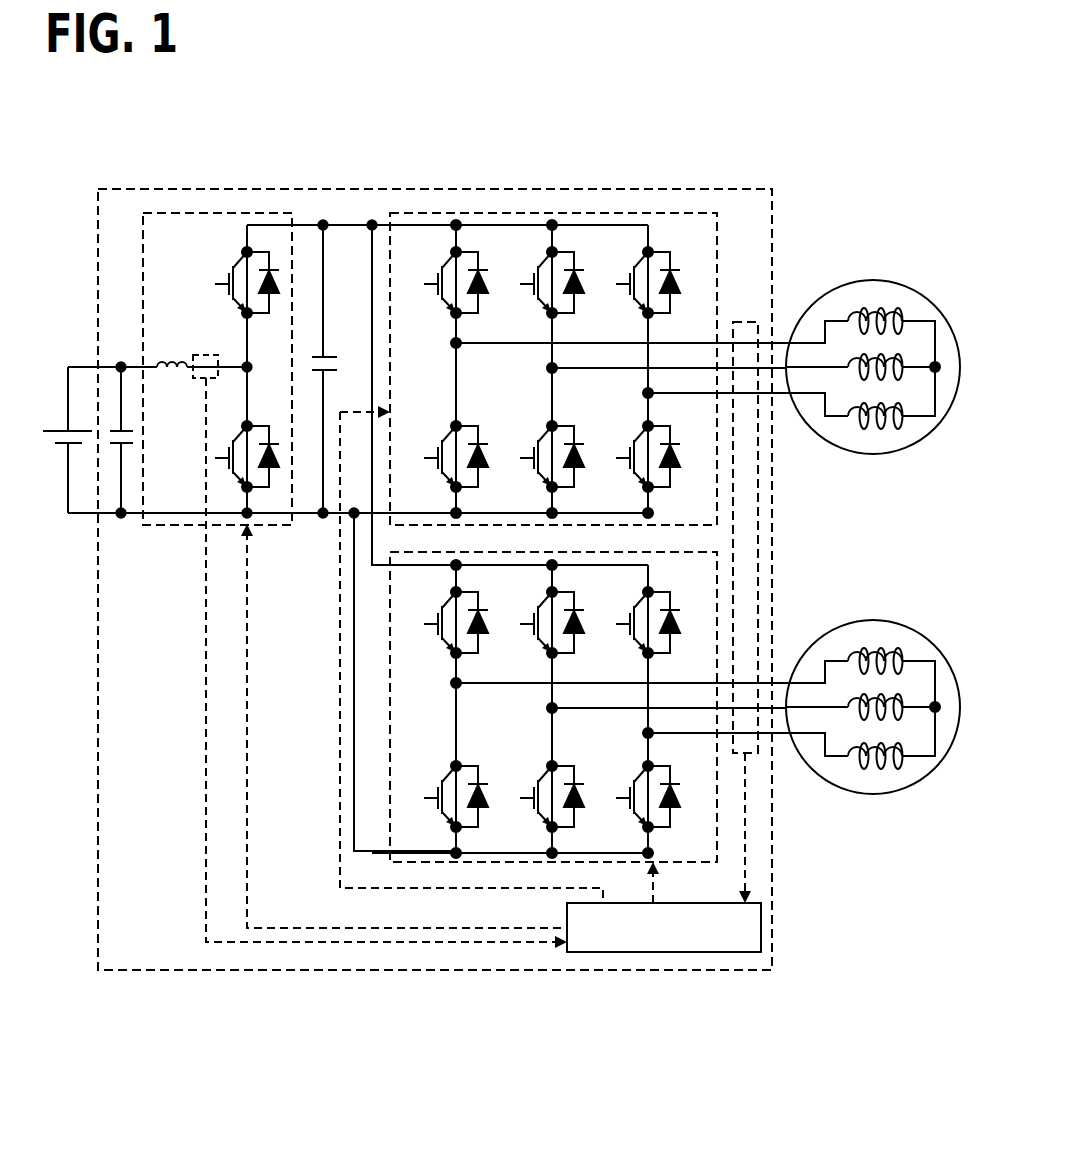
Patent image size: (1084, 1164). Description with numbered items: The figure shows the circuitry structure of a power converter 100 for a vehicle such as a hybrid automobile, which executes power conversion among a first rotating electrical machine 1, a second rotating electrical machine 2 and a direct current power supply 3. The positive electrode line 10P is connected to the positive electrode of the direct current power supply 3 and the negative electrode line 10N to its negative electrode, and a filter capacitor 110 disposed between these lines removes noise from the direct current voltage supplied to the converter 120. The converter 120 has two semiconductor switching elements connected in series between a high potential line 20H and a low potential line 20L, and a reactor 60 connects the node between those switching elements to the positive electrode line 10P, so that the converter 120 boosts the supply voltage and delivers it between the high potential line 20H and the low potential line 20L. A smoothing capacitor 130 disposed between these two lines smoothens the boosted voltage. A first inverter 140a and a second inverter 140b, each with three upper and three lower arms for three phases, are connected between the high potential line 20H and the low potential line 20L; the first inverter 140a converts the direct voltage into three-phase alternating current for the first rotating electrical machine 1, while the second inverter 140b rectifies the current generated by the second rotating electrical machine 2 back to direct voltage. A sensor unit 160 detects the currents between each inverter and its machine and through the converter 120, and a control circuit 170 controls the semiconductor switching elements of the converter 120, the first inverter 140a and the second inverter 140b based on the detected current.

The first rotating electrical machine 1 is at (870, 280).
The second rotating electrical machine 2 is at (870, 620).
The direct current power supply 3 is at (68, 428).
The power converter 100 is at (754, 189).
The filter capacitor 110 is at (77, 367).
The converter 120 is at (243, 213).
The smoothing capacitor 130 is at (330, 355).
The first inverter 140a is at (688, 213).
The second inverter 140b is at (392, 752).
The sensor unit 160 is at (207, 353).
The control circuit 170 is at (697, 953).
The reactor 60 is at (168, 355).
The positive electrode line 10P is at (122, 362).
The negative electrode line 10N is at (133, 518).
The high potential line 20H is at (305, 225).
The low potential line 20L is at (305, 518).